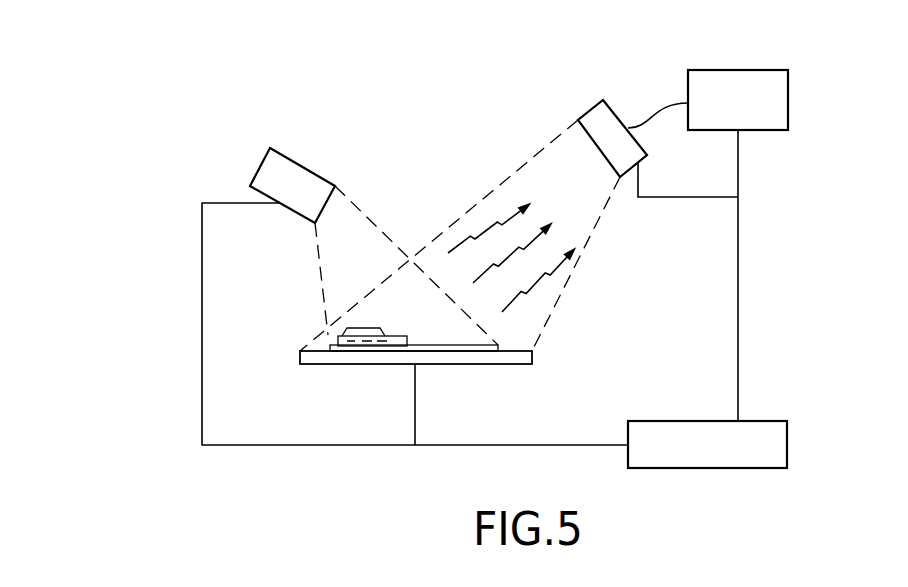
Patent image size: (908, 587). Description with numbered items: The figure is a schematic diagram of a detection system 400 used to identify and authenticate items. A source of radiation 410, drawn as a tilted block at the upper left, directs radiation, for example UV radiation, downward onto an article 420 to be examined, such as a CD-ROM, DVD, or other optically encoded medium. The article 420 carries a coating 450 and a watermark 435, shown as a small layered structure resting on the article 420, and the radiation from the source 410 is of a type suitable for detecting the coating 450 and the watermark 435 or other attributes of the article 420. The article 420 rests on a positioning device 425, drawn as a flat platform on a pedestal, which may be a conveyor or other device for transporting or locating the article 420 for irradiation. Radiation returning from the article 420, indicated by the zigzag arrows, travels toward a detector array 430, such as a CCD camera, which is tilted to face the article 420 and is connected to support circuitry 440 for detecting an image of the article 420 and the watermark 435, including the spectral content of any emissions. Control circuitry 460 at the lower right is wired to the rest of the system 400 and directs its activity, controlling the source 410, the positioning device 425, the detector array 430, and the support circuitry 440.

The detection system 400 is at (401, 116).
The source of radiation 410 is at (263, 167).
The article 420 is at (424, 346).
The positioning device 425 is at (470, 365).
The detector array 430 is at (595, 107).
The watermark 435 is at (362, 326).
The support circuitry 440 is at (790, 97).
The coating 450 is at (397, 334).
The control circuitry 460 is at (787, 442).